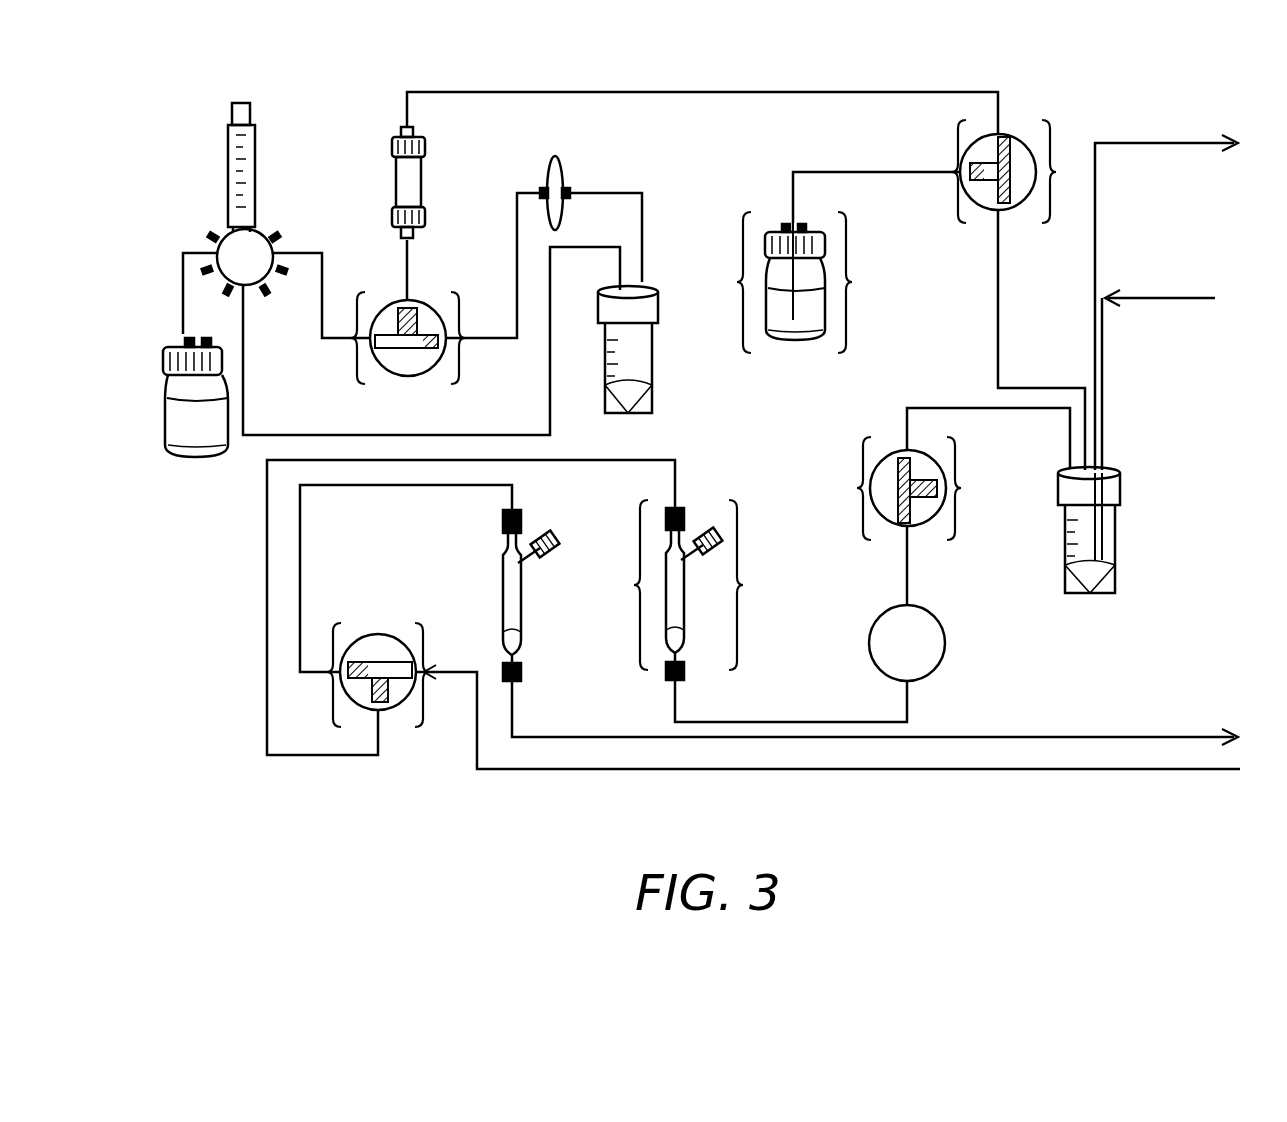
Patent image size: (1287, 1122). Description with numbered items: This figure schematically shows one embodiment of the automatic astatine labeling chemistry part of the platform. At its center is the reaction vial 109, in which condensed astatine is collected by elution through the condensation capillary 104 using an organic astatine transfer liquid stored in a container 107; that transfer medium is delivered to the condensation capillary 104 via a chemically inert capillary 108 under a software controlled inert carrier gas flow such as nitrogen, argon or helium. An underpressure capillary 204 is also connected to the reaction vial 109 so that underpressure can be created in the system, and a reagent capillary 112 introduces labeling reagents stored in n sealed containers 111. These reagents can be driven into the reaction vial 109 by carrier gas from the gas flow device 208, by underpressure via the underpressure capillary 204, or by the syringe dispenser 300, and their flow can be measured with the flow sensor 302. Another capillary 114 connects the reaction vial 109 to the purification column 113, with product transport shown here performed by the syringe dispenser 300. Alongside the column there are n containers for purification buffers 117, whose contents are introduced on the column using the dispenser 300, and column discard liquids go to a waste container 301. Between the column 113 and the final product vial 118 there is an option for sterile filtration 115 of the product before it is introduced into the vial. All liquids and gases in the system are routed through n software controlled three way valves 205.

The syringe dispenser 300 is at (269, 200).
The waste container 301 is at (197, 421).
The purification column 113 is at (444, 213).
The software controlled three way valves 205 is at (699, 411).
The sterile filtration 115 is at (593, 187).
The final product vial 118 is at (668, 349).
The containers for purification buffers 117 is at (831, 277).
The underpressure capillary 204 is at (1166, 285).
The condensation capillary 104 is at (1164, 362).
The capillary 114 is at (1041, 340).
The reagent capillary 112 is at (988, 416).
The reaction vial 109 is at (1128, 530).
The flow sensor 302 is at (943, 643).
The container 107 is at (826, 623).
The sealed containers 111 is at (667, 586).
The chemically inert capillary 108 is at (1201, 721).
The gas flow device 208 is at (833, 739).